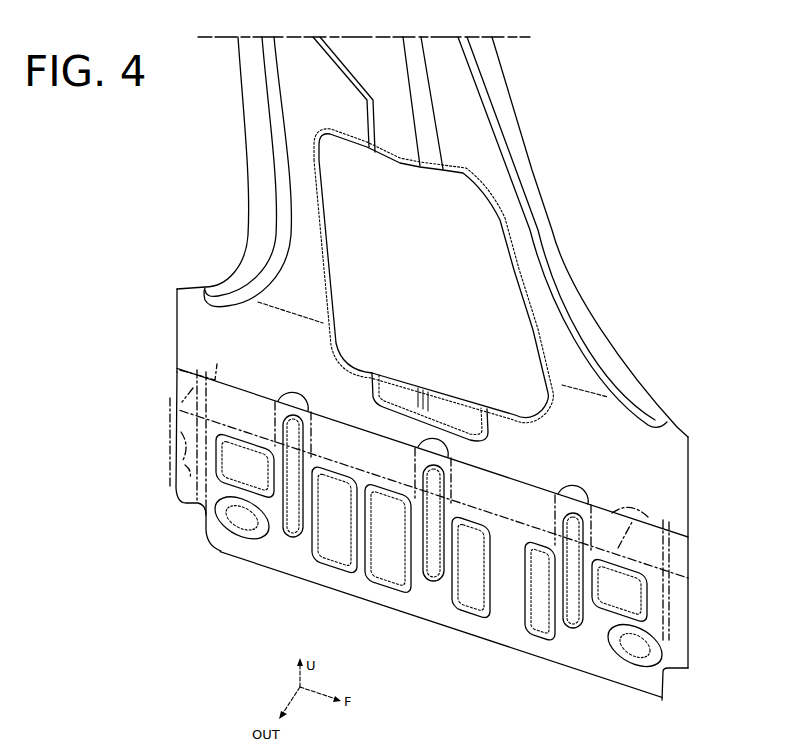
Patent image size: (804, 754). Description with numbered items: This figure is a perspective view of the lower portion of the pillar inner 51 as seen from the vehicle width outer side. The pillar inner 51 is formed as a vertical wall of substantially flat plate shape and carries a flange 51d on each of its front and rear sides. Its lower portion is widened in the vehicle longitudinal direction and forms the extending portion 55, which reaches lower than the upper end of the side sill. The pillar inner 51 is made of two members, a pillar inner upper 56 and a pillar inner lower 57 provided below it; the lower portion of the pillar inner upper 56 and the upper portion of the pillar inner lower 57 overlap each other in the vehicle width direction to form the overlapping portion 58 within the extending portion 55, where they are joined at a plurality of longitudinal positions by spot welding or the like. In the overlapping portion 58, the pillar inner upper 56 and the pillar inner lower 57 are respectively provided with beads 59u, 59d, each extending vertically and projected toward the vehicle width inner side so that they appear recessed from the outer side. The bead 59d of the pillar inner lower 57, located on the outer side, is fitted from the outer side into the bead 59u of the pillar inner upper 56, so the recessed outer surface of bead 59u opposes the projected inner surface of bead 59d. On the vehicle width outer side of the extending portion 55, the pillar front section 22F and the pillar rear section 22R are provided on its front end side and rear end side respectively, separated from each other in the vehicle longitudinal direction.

The pillar inner 51 is at (566, 191).
The flange 51d is at (262, 197).
The extending portion 55 is at (708, 424).
The pillar inner upper 56 is at (690, 483).
The pillar inner lower 57 is at (663, 700).
The overlapping portion 58 is at (698, 537).
The bead 59u is at (280, 395).
The bead 59d is at (290, 537).
The pillar rear section 22R is at (165, 501).
The pillar front section 22F is at (598, 638).